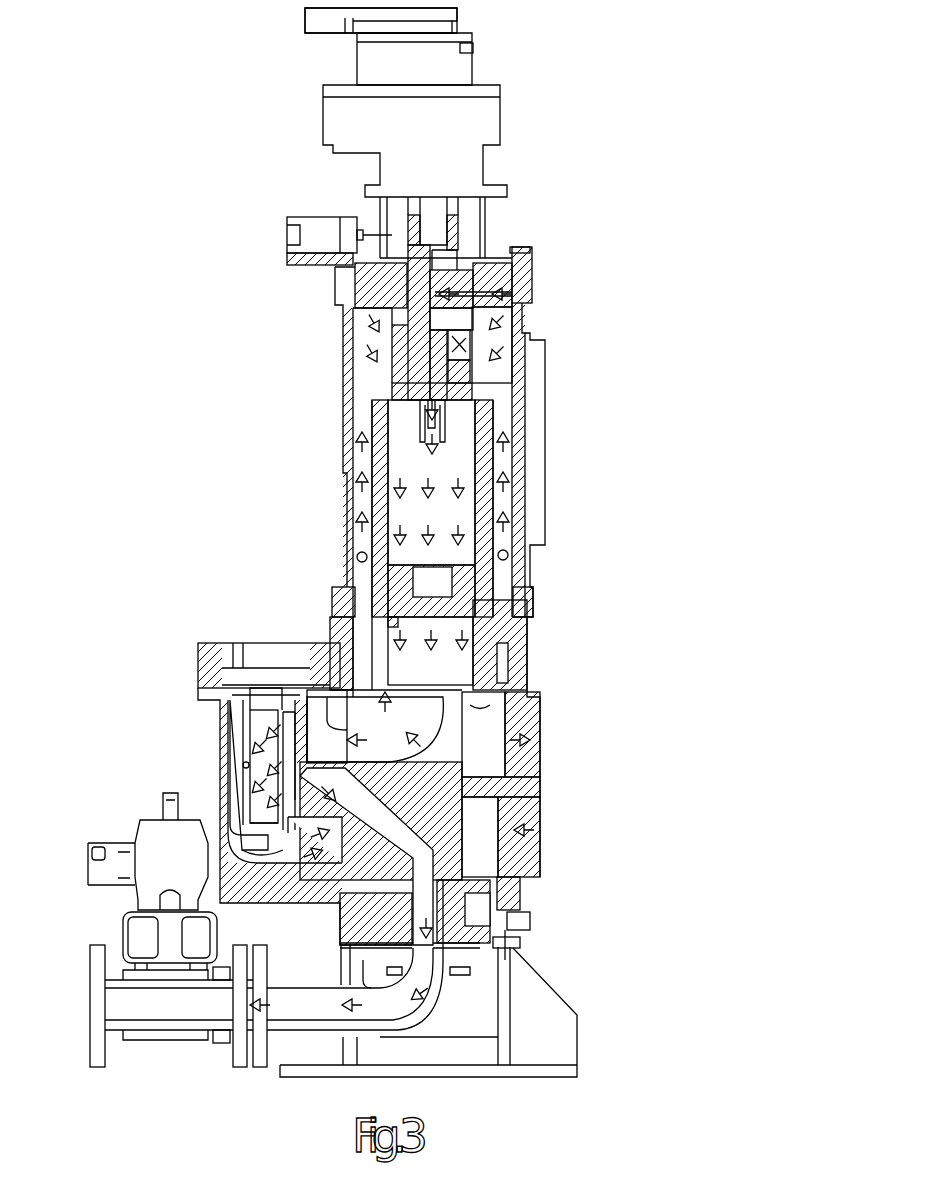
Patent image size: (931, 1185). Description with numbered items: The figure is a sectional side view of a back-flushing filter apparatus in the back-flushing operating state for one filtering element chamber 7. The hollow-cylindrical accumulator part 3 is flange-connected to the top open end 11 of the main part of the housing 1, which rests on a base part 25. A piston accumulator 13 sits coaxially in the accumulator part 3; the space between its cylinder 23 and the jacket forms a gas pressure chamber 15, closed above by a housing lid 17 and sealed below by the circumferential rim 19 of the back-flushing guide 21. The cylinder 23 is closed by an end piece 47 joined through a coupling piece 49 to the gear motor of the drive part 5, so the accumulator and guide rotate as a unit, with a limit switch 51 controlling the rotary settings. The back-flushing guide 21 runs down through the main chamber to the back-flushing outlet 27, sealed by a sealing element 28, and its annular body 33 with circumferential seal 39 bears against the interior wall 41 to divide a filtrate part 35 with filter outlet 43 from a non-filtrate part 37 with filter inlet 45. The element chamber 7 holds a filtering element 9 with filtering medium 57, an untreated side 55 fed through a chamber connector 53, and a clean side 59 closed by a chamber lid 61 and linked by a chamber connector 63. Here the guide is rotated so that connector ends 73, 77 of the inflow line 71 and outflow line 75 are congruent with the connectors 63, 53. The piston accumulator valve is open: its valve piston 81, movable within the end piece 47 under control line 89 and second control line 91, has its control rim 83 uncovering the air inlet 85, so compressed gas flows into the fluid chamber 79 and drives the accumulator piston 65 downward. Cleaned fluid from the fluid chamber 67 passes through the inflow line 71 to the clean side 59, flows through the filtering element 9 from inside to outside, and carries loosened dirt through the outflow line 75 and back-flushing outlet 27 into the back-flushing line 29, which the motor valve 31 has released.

The main part of the housing 1 is at (470, 795).
The accumulator part 3 is at (248, 430).
The drive part 5 is at (472, 158).
The filtering element chamber 7 is at (220, 728).
The filtering element 9 is at (247, 770).
The top open end 11 is at (522, 610).
The piston accumulator 13 is at (410, 410).
The gas pressure chamber 15 is at (362, 362).
The housing lid 17 is at (375, 280).
The circumferential rim 19 is at (508, 665).
The back-flushing guide 21 is at (480, 838).
The cylinder 23 is at (380, 460).
The base part 25 is at (343, 945).
The back-flushing outlet 27 is at (520, 950).
The sealing element 28 is at (515, 932).
The back-flushing line 29 is at (368, 1020).
The motor valve 31 is at (140, 940).
The annular body 33 is at (507, 782).
The filtrate part 35 is at (495, 707).
The non-filtrate part 37 is at (522, 880).
The circumferential seal 39 is at (533, 786).
The interior wall of the main chamber 41 is at (333, 820).
The filter outlet 43 is at (545, 752).
The filter inlet 45 is at (500, 823).
The end piece 47 is at (390, 372).
The coupling piece 49 is at (407, 243).
The limit switch 51 is at (317, 222).
The chamber connector 53 is at (237, 835).
The untreated side 55 is at (232, 830).
The filtering medium 57 is at (243, 753).
The clean side 59 is at (268, 686).
The chamber lid 61 is at (257, 670).
The chamber connector 63 is at (300, 690).
The accumulator piston 65 is at (467, 573).
The fluid chamber 67 is at (445, 632).
The inflow line 71 is at (408, 688).
The connector end 73 is at (350, 697).
The outflow line 75 is at (433, 982).
The connector end 77 is at (335, 903).
The fluid chamber 79 is at (455, 428).
The valve piston 81 is at (470, 333).
The control rim 83 is at (413, 407).
The air inlet 85 is at (477, 380).
The control line 89 is at (530, 263).
The second control line 91 is at (512, 250).